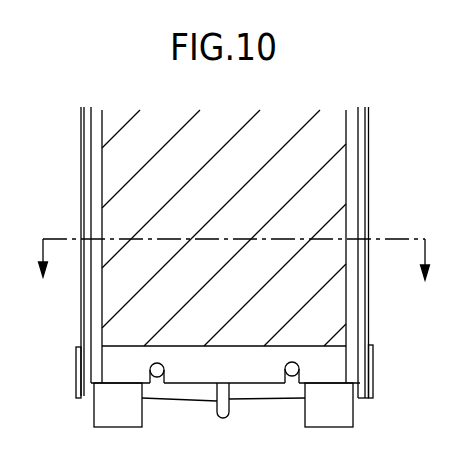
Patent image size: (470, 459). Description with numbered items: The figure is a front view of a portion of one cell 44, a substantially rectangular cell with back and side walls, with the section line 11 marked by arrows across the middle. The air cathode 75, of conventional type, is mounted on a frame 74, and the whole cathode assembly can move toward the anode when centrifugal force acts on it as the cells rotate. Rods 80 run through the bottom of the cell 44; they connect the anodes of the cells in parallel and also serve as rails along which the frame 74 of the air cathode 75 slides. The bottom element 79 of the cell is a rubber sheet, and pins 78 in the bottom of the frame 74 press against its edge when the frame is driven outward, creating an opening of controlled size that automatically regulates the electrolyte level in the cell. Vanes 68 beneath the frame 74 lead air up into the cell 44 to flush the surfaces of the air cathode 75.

The section line 11 is at (235, 272).
The cell 44 is at (370, 223).
The vane 68 is at (100, 413).
The frame 74 is at (100, 364).
The air cathode 75 is at (250, 137).
The pin 78 is at (229, 415).
The bottom element 79 is at (226, 402).
The rod 80 is at (300, 366).